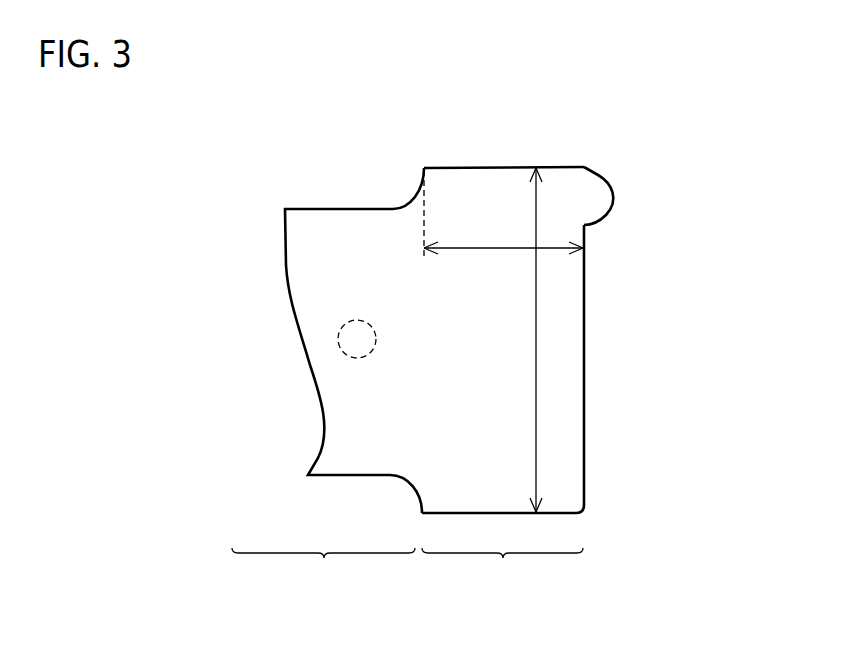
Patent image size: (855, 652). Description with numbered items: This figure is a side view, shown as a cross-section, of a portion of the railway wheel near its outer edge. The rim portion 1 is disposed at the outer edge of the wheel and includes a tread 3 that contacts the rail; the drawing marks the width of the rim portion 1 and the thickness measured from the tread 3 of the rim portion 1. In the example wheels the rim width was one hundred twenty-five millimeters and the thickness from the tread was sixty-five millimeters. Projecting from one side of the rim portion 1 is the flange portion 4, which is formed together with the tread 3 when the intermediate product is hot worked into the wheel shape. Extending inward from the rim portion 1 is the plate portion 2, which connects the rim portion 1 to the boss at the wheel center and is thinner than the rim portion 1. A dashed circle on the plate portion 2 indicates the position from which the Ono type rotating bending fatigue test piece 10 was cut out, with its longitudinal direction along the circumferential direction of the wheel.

The rim portion 1 is at (503, 390).
The plate portion 2 is at (328, 390).
The tread 3 is at (456, 390).
The flange portion 4 is at (590, 199).
The Ono type rotating bending fatigue test piece 10 is at (357, 342).